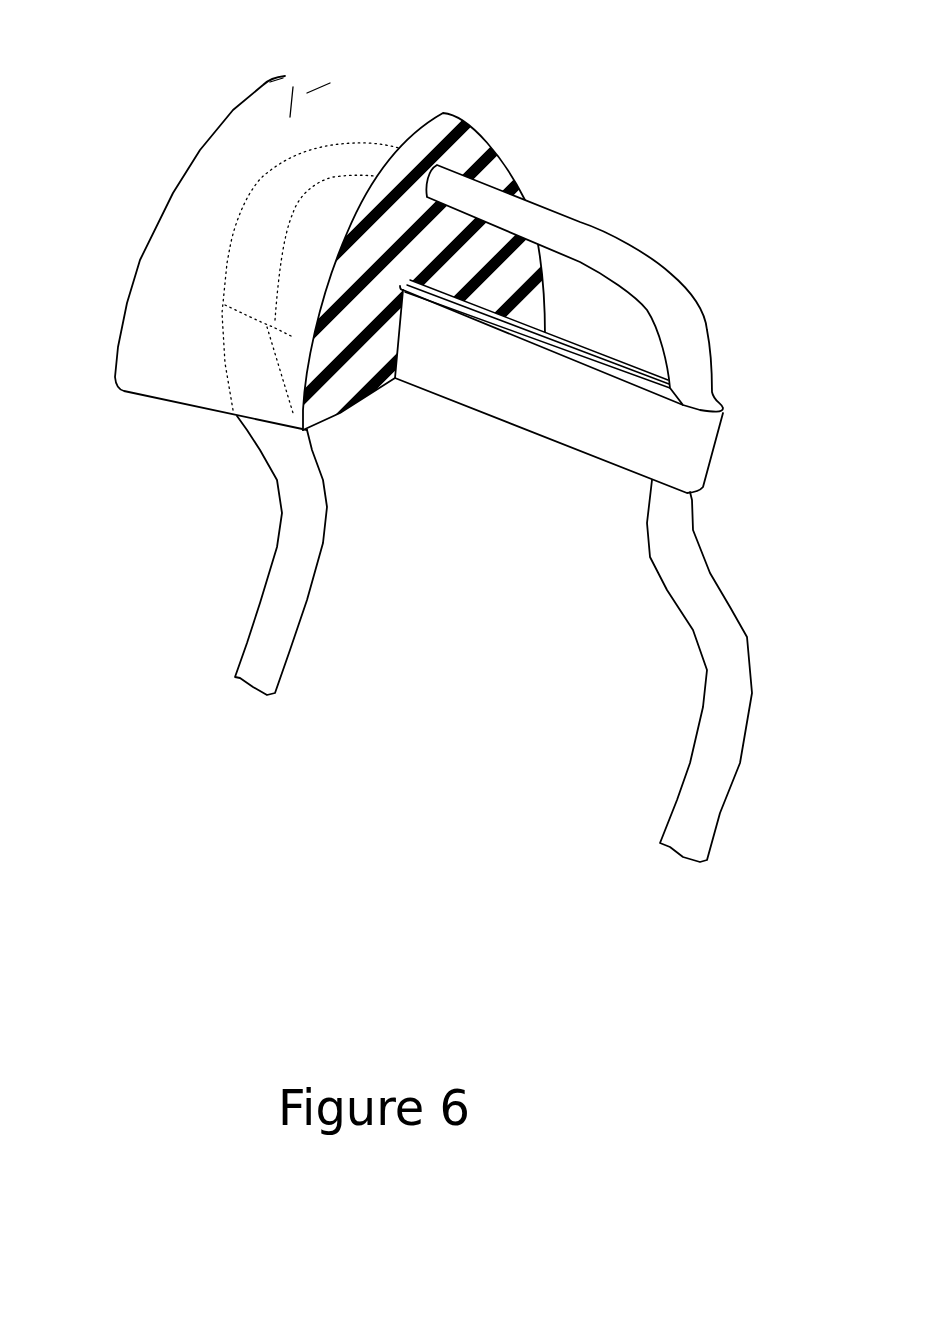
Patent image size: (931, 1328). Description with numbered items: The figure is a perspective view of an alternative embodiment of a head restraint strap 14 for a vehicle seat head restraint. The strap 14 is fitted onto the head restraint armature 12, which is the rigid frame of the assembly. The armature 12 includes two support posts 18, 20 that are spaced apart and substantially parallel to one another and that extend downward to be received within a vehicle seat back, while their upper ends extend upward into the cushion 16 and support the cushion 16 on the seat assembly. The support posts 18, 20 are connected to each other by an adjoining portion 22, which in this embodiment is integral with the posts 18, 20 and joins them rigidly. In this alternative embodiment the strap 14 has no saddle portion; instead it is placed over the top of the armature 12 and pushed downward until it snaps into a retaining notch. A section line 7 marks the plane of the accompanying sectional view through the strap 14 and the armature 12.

The section line 7- 7 is at (443, 112).
The head restraint armature 12 is at (445, 103).
The strap 14 is at (678, 438).
The cushion 16 is at (187, 237).
The support post 18 is at (267, 630).
The support post 20 is at (707, 603).
The adjoining portion 22 is at (590, 228).